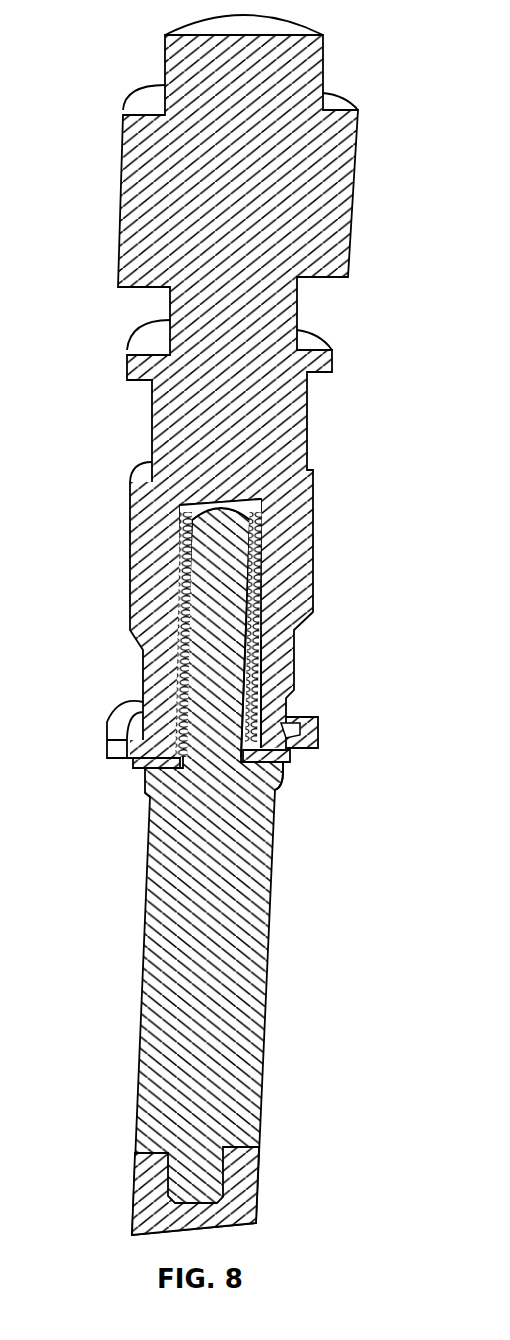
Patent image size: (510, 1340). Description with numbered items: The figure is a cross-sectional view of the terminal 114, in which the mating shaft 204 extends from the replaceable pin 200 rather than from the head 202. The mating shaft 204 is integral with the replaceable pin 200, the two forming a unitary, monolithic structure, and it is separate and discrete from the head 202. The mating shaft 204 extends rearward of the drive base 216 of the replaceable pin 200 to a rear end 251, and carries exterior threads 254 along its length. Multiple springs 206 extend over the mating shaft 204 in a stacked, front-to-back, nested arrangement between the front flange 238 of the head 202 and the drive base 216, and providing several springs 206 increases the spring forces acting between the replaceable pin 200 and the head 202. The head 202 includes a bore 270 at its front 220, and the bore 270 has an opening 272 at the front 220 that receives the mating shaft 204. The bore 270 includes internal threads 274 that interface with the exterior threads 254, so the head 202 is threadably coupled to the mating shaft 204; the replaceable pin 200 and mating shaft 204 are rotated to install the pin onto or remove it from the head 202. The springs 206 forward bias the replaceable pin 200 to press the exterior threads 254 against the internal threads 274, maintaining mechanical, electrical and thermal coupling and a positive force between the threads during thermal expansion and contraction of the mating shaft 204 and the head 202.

The terminal 114 is at (356, 48).
The replaceable pin 200 is at (252, 907).
The head 202 is at (302, 545).
The mating shaft 204 is at (240, 632).
The springs 206 is at (290, 752).
The drive base 216 is at (280, 787).
The front 220 is at (107, 758).
The front flange 238 is at (107, 742).
The rear end 251 is at (227, 510).
The exterior threads 254 is at (253, 598).
The bore 270 is at (259, 667).
The opening 272 is at (178, 755).
The internal threads 274 is at (248, 697).